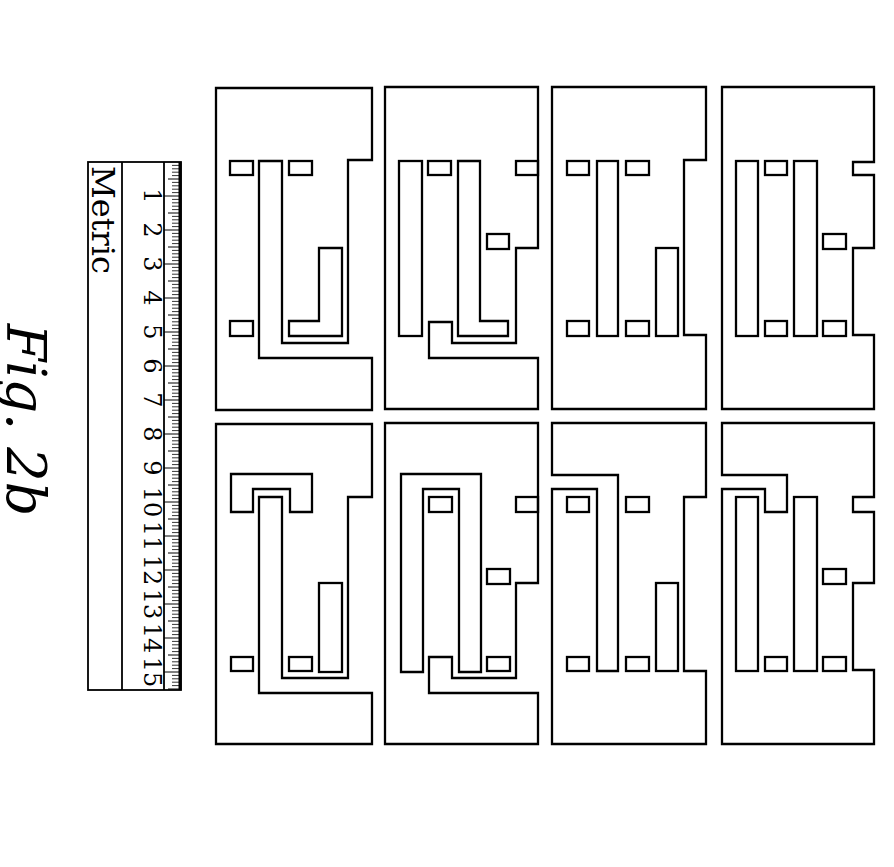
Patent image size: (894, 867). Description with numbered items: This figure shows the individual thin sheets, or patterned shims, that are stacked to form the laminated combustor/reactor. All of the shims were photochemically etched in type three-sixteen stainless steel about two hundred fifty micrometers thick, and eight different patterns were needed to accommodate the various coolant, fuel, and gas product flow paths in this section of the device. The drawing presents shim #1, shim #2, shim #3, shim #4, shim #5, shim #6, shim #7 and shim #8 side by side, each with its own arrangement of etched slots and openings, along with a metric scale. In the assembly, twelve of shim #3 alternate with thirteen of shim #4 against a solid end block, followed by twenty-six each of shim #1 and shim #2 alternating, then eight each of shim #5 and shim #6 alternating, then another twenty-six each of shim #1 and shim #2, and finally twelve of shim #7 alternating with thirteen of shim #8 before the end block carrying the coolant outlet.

The shim # 1 is at (798, 230).
The shim # 2 is at (629, 229).
The shim # 3 is at (461, 229).
The shim # 4 is at (294, 230).
The shim # 5 is at (798, 604).
The shim # 6 is at (629, 604).
The shim # 7 is at (461, 604).
The shim # 8 is at (294, 604).